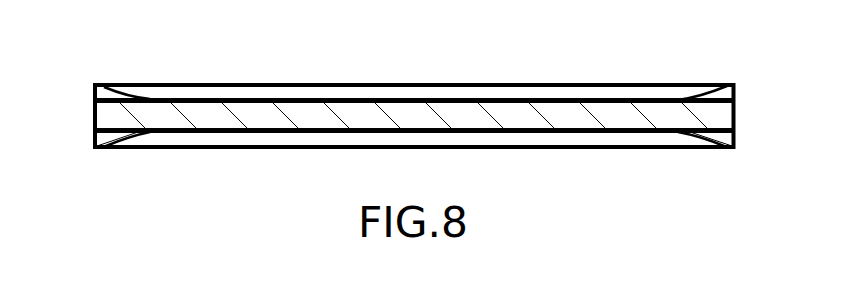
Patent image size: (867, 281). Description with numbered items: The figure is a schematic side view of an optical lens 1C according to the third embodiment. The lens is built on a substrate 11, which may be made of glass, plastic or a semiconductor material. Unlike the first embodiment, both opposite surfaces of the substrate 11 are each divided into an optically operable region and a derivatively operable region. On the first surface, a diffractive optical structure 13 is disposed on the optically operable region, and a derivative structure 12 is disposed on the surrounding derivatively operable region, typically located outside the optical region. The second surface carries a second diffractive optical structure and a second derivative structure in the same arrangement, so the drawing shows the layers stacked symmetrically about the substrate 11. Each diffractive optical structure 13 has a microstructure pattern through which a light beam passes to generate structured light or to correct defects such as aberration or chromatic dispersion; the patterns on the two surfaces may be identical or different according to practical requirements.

The optical lens 1C is at (281, 52).
The substrate 11 is at (268, 115).
The derivative structure 12 is at (104, 94).
The diffractive optical structure 13 is at (526, 93).